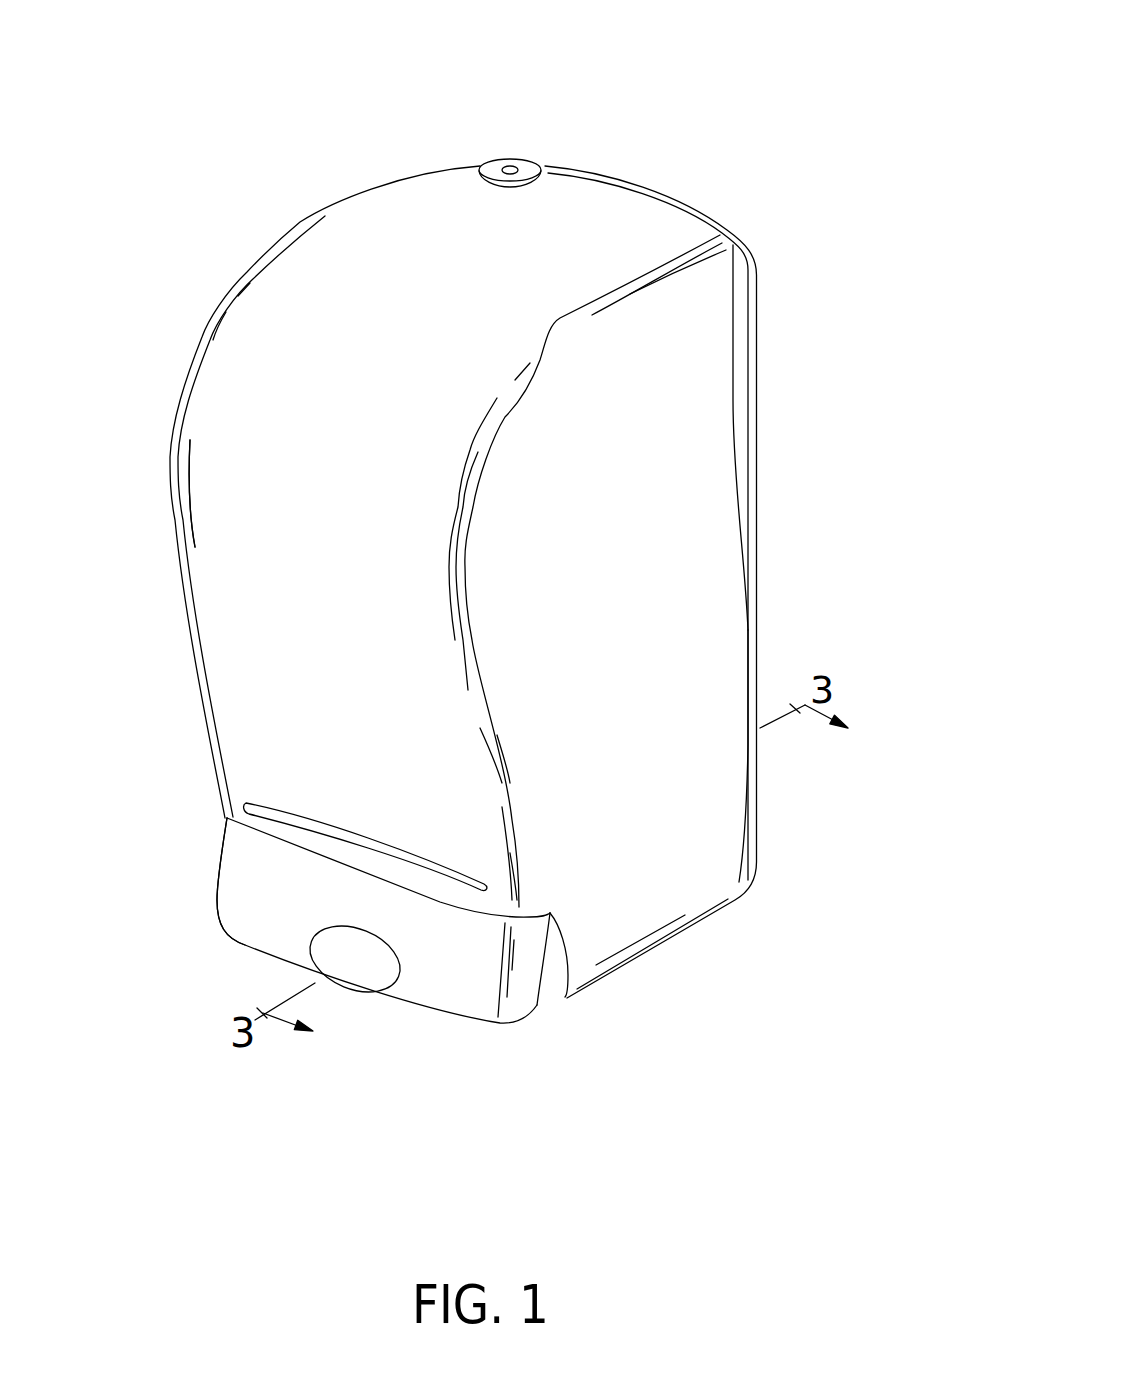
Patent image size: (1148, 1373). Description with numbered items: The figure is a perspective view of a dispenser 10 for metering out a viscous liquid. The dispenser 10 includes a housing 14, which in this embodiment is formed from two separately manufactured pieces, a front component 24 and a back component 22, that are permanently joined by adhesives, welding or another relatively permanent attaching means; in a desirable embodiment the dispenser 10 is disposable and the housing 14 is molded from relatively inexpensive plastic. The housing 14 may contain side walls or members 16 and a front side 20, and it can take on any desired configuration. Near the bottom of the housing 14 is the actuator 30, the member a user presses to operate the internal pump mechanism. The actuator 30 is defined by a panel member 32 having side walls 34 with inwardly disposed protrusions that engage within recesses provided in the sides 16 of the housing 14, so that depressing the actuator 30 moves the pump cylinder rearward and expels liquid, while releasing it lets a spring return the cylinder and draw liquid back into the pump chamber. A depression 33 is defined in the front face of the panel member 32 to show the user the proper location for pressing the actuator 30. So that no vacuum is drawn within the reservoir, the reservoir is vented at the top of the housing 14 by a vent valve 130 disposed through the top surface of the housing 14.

The dispenser 10 is at (758, 50).
The housing 14 is at (611, 239).
The vent valve 130 is at (522, 168).
The side walls 16 is at (705, 636).
The front side 20 is at (205, 488).
The back component 22 is at (758, 335).
The front component 24 is at (215, 307).
The actuator 30 is at (218, 855).
The panel member 32 is at (240, 922).
The depression 33 is at (360, 965).
The side walls 34 is at (525, 995).